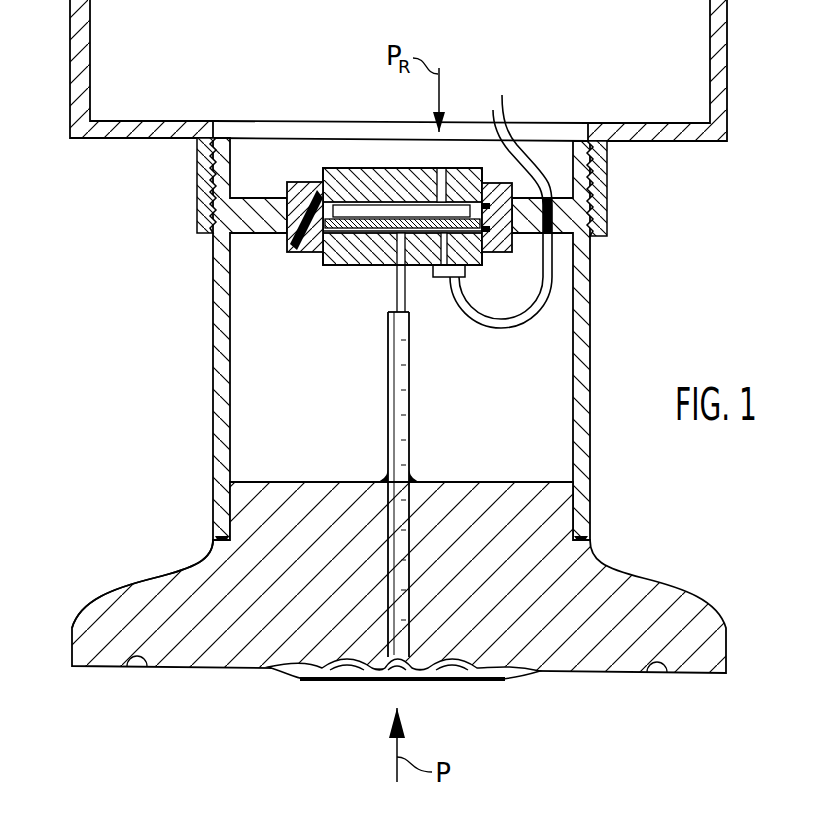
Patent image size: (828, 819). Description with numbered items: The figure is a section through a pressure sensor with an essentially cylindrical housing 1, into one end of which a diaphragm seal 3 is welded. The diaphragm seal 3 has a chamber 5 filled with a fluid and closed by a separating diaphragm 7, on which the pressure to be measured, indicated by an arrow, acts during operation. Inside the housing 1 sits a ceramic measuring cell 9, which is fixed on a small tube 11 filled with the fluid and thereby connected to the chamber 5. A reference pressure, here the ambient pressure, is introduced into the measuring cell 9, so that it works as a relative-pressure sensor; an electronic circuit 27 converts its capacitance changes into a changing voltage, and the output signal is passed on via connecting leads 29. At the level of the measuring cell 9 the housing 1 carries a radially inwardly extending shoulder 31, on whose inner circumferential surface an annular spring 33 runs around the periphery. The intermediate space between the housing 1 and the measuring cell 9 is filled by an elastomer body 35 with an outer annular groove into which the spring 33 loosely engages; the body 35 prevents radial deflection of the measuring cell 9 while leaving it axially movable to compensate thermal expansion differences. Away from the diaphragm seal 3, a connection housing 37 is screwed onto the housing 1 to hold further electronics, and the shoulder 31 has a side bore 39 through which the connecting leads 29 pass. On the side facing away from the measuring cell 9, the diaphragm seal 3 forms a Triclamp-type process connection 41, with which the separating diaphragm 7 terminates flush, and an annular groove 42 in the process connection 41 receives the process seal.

The housing 1 is at (215, 405).
The diaphragm seal 3 is at (627, 600).
The chamber 5 is at (316, 673).
The separating diaphragm 7 is at (491, 678).
The ceramic measuring cell 9 is at (367, 167).
The small tube 11 is at (389, 415).
The electronic circuit 27 is at (435, 280).
The connecting leads 29 is at (510, 108).
The shoulder 31 is at (237, 217).
The spring 33 is at (302, 215).
The body 35 is at (298, 183).
The connection housing 37 is at (76, 108).
The bore 39 is at (572, 212).
The process connection 41 is at (131, 584).
The groove 42 is at (138, 665).